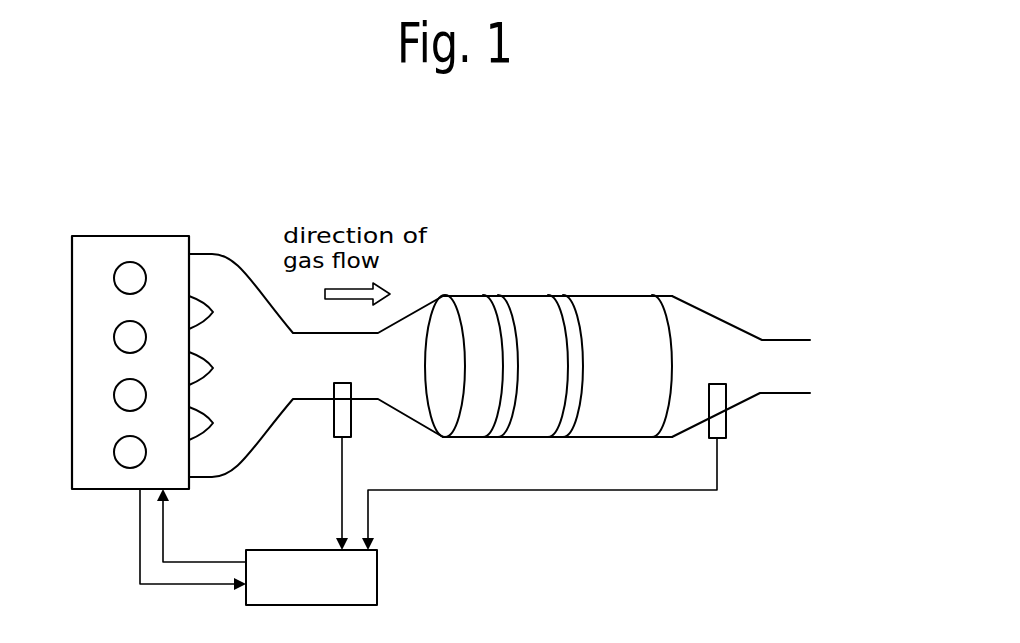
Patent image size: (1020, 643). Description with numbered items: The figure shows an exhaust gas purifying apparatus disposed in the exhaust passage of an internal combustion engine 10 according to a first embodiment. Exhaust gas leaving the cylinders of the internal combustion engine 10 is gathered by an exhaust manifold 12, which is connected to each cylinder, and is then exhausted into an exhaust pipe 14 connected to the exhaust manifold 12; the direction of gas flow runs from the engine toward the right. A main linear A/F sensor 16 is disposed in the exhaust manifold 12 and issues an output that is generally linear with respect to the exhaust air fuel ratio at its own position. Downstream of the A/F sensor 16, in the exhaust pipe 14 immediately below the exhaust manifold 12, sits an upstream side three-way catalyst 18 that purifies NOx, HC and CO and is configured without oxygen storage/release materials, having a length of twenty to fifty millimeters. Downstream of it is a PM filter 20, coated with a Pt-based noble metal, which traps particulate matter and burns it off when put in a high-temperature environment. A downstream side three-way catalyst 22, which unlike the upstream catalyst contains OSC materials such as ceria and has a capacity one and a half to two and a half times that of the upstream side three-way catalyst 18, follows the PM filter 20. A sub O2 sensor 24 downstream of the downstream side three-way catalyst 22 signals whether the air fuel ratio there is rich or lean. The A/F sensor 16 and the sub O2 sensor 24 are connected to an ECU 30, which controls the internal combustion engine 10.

The internal combustion engine 10 is at (180, 230).
The exhaust manifold 12 is at (297, 331).
The exhaust pipe 14 is at (777, 339).
The A/F sensor 16 is at (352, 420).
The upstream side three-way catalyst 18 is at (465, 318).
The PM filter 20 is at (525, 300).
The downstream side three-way catalyst 22 is at (612, 305).
The sub O2 sensor 24 is at (720, 425).
The ECU 30 is at (377, 580).